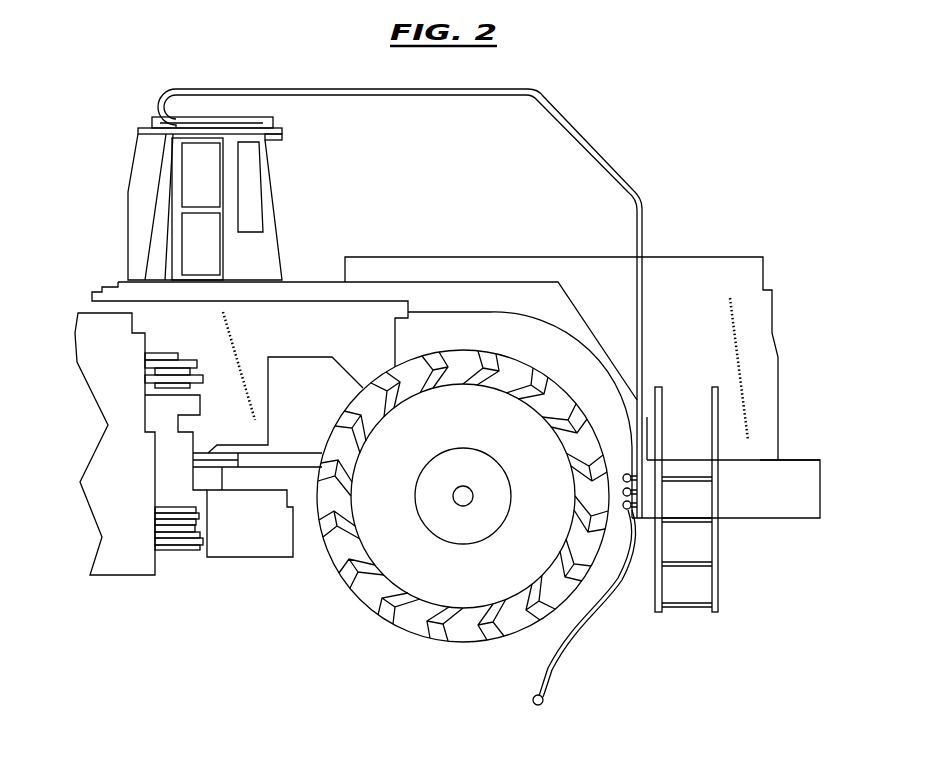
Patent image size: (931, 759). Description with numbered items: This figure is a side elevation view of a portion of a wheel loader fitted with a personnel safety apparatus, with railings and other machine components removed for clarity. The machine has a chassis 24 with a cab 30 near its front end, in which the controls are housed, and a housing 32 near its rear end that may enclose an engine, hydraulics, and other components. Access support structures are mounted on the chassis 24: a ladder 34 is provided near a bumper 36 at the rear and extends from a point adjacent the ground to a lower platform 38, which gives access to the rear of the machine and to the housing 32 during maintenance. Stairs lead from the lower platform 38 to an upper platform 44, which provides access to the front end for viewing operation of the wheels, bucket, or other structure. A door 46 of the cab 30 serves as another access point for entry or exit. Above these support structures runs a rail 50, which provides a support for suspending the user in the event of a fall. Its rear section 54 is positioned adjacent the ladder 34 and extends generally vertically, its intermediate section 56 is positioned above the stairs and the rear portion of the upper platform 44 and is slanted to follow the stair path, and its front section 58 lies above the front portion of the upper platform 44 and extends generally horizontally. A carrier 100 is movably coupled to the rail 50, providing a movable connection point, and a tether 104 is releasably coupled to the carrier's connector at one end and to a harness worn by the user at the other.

The chassis 24 is at (232, 538).
The cab 30 is at (268, 172).
The housing 32 is at (705, 272).
The ladder 34 is at (657, 592).
The bumper 36 is at (785, 493).
The lower platform 38 is at (792, 458).
The upper platform 44 is at (313, 282).
The door 46 is at (170, 212).
The rail 50 is at (590, 128).
The rear section 54 is at (643, 285).
The intermediate section 56 is at (586, 141).
The front section 58 is at (246, 88).
The carrier 100 is at (623, 506).
The tether 104 is at (545, 650).